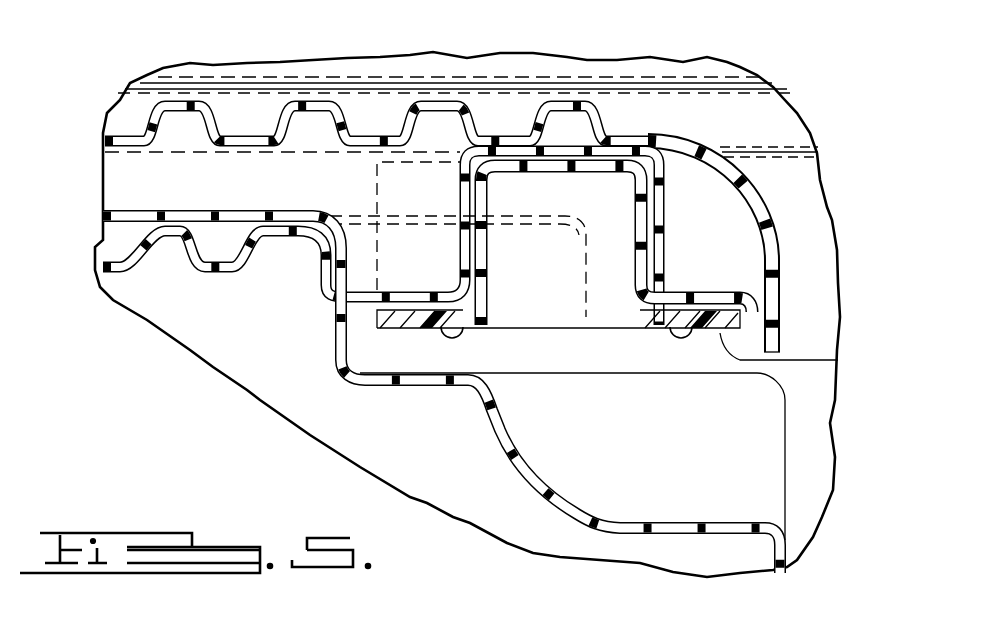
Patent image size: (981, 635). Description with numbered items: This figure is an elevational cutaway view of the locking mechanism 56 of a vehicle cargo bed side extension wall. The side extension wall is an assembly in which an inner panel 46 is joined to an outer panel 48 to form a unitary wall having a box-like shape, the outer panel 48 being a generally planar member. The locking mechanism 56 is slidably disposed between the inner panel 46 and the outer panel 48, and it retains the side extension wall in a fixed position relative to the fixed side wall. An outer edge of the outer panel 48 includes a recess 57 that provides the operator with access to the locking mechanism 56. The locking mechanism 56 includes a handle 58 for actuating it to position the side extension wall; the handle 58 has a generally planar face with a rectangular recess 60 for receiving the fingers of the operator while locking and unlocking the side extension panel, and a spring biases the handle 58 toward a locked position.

The inner panel 46 is at (533, 500).
The outer panel 48 is at (673, 137).
The locking mechanism 56 is at (677, 200).
The recess 57 is at (636, 365).
The handle 58 is at (838, 360).
The rectangular recess 60 is at (584, 211).